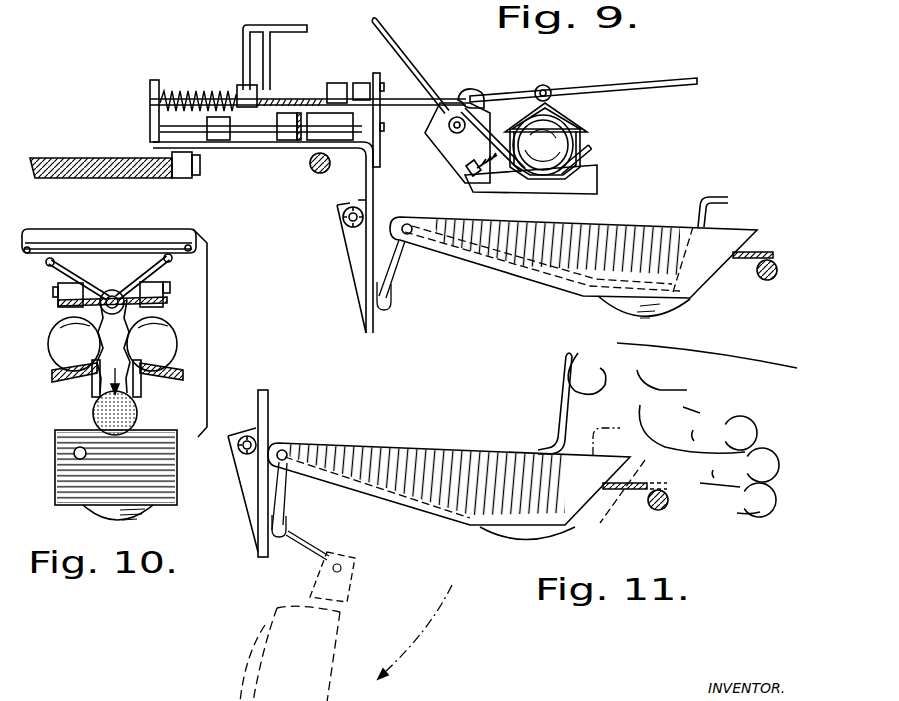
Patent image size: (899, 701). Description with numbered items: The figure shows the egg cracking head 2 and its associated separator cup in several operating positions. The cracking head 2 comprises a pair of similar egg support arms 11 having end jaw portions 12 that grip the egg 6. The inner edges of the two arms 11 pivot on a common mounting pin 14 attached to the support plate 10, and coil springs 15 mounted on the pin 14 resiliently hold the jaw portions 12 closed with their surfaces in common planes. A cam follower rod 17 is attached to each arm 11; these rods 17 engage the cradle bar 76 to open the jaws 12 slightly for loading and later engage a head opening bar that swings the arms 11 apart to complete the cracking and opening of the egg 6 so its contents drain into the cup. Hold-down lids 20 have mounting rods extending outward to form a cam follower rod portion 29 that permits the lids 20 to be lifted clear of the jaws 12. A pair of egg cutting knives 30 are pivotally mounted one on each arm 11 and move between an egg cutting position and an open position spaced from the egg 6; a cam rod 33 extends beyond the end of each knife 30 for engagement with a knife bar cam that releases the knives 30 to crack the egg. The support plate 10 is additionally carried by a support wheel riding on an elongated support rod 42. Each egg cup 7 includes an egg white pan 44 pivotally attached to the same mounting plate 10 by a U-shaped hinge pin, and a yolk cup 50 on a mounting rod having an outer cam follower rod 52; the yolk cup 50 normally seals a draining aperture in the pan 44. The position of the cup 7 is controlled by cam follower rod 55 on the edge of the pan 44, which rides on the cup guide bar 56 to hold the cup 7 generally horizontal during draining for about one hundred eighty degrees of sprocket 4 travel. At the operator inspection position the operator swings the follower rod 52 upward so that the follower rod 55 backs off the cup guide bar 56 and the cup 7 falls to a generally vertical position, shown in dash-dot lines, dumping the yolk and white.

In FIG. 9, the egg cracking head 2 is at (346, 72).
In FIG. 9, the sprocket 4 is at (97, 158).
In FIG. 9, the egg 6 is at (575, 142).
In FIG. 9, the egg cup 7 is at (442, 219).
In FIG. 10, the egg cup 7 is at (172, 482).
In FIG. 11, the egg cup 7 is at (337, 450).
In FIG. 9, the support plate 10 is at (368, 215).
In FIG. 11, the support plate 10 is at (262, 435).
In FIG. 9, the egg support arms 11 is at (270, 108).
In FIG. 10, the jaw portions 12 is at (55, 382).
In FIG. 9, the mounting pin 14 is at (190, 90).
In FIG. 9, the coil springs 15 is at (307, 93).
In FIG. 9, the cam follower rod 17 is at (253, 29).
In FIG. 10, the cam follower rod 17 is at (56, 273).
In FIG. 9, the hold-down lids 20 is at (583, 120).
In FIG. 9, the cam follower rod portion 29 is at (664, 87).
In FIG. 9, the egg cutting knives 30 is at (598, 185).
In FIG. 10, the egg cutting knives 30 is at (93, 390).
In FIG. 9, the cam rod 33 is at (388, 33).
In FIG. 9, the support rod 42 is at (313, 165).
In FIG. 9, the egg white pan 44 is at (573, 277).
In FIG. 11, the egg white pan 44 is at (460, 508).
In FIG. 9, the yolk cup 50 is at (623, 303).
In FIG. 10, the yolk cup 50 is at (145, 506).
In FIG. 11, the yolk cup 50 is at (527, 533).
In FIG. 9, the cam follower rod 52 is at (728, 200).
In FIG. 11, the cam follower rod 52 is at (563, 355).
In FIG. 9, the cam follower rod 55 is at (770, 253).
In FIG. 11, the cam follower rod 55 is at (640, 491).
In FIG. 9, the cup guide bar 56 is at (773, 278).
In FIG. 11, the cup guide bar 56 is at (668, 508).
In FIG. 10, the cradle bar 76 is at (88, 238).